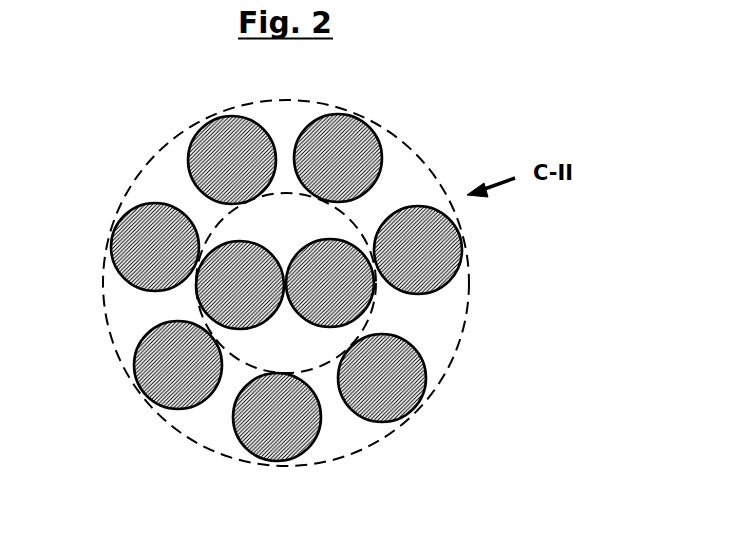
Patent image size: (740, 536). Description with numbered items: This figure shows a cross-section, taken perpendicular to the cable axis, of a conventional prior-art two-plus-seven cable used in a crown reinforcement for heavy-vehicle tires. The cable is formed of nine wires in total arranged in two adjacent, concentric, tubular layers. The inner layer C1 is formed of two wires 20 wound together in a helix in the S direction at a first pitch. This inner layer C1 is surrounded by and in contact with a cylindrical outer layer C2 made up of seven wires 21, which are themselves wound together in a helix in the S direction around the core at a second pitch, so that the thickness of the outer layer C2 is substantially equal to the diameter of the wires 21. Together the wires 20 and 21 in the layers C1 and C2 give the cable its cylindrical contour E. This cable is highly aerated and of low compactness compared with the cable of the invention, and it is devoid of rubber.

The wires of the inner layer 20 is at (313, 275).
The wires of the outer layer 21 is at (338, 158).
The inner layer C1 is at (283, 332).
The outer layer C2 is at (333, 271).
The cylindrical contour E is at (370, 445).